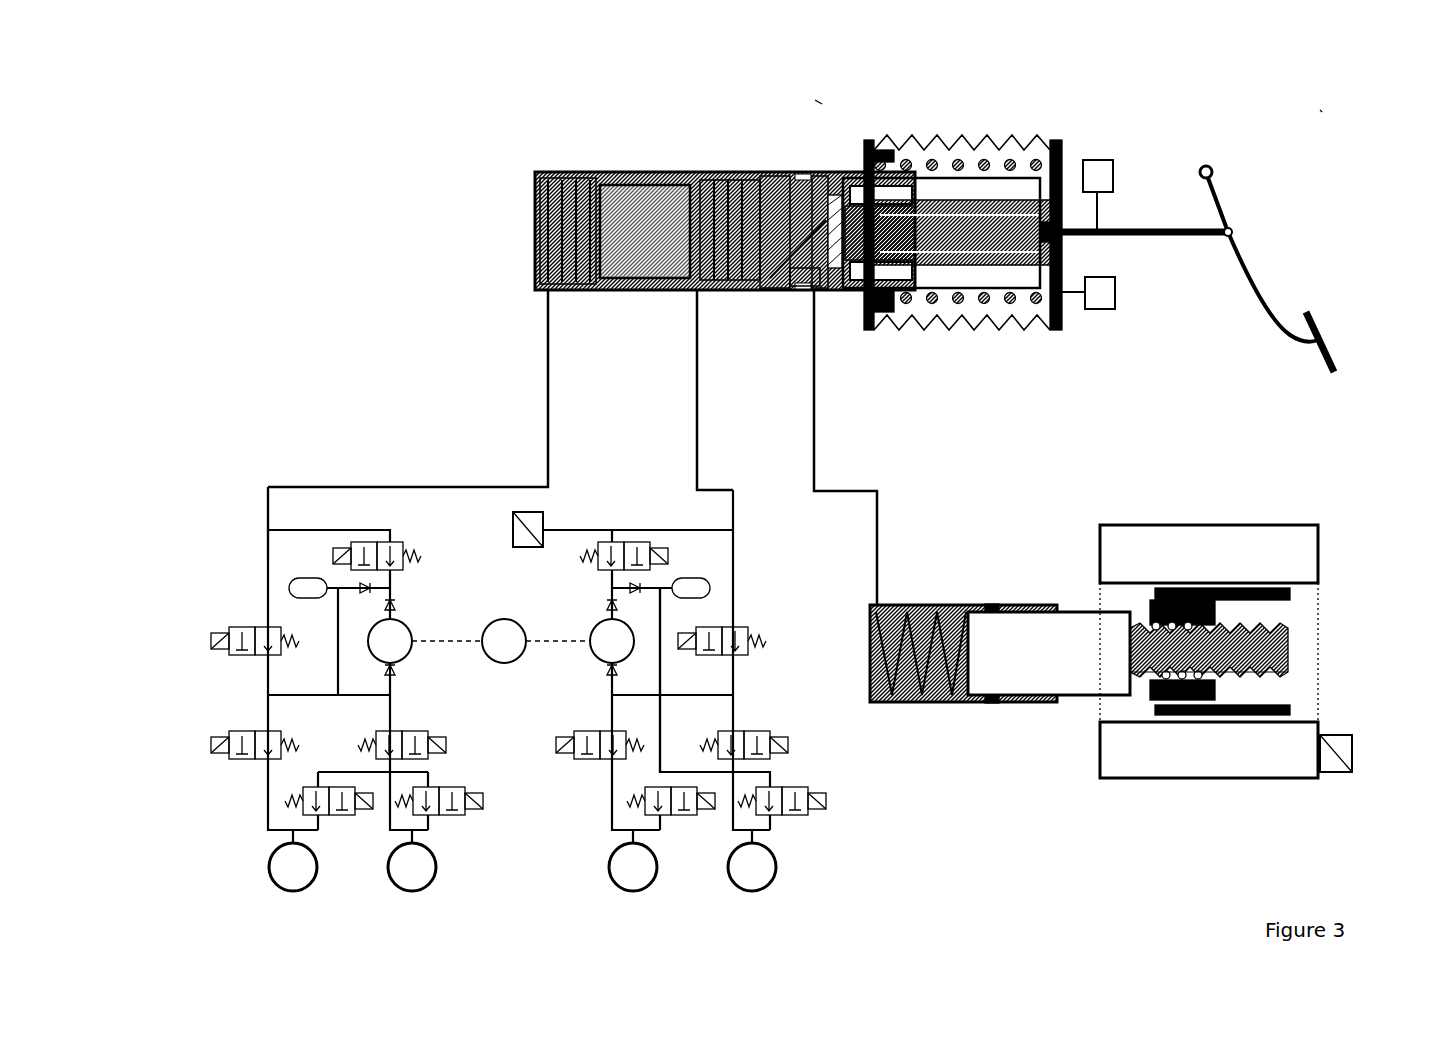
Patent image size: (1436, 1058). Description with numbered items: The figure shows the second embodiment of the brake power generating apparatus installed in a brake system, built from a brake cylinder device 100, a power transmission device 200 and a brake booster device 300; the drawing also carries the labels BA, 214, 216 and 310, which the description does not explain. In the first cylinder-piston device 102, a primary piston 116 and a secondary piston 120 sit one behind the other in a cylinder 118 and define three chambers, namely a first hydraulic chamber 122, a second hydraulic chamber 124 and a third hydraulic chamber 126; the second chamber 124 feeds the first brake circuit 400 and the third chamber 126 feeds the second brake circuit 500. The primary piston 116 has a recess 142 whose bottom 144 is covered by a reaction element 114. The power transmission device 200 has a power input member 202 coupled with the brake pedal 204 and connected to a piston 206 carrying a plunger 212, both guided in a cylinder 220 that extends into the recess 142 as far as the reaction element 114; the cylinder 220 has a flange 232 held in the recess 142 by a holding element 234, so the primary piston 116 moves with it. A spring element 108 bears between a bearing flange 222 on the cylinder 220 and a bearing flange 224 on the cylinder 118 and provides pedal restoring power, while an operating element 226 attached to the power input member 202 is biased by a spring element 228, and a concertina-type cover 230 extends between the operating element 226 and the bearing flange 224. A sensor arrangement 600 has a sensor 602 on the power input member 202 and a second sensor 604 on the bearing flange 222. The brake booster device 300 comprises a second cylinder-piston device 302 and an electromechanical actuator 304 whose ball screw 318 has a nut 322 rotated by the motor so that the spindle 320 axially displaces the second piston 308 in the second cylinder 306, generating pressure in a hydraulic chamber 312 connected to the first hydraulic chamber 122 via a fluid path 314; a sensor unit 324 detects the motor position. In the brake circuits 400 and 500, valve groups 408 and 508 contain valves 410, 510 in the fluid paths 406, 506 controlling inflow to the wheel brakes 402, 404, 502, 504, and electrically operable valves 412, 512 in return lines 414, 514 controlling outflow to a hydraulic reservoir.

The brake apparatus BA is at (1328, 108).
The brake cylinder device 100 is at (822, 98).
The first cylinder-piston device 102 is at (725, 236).
The spring element 108 is at (964, 233).
The reaction element 114 is at (818, 172).
The primary piston 116 is at (776, 172).
The cylinder 118 is at (640, 290).
The secondary piston 120 is at (650, 172).
The first hydraulic chamber 122 is at (789, 290).
The second hydraulic chamber 124 is at (738, 172).
The third hydraulic chamber 126 is at (560, 172).
The recess 142 is at (888, 330).
The bottom 144 is at (753, 290).
The power transmission device 200 is at (1196, 235).
The power input member 202 is at (1173, 245).
The brake pedal 204 is at (1290, 345).
The piston 206 is at (930, 336).
The plunger 212 is at (858, 295).
The upper seal 214 is at (826, 292).
The piston head 216 is at (844, 172).
The cylinder 220 is at (1006, 332).
The bearing flange 222 is at (1043, 332).
The bearing flange 224 is at (870, 145).
The operating element 226 is at (1062, 318).
The spring element 228 is at (1054, 140).
The concertina-type cover 230 is at (992, 158).
The flange 232 is at (886, 150).
The holding element 234 is at (906, 145).
The brake booster device 300 is at (1121, 645).
The second cylinder-piston device 302 is at (991, 649).
The electromechanical actuator 304 is at (1224, 524).
The second cylinder 306 is at (875, 705).
The second piston 308 is at (1000, 697).
The ball screw 310 is at (1125, 660).
The hydraulic chamber 312 is at (925, 705).
The fluid path 314 is at (880, 520).
The ball screw 318 is at (1300, 605).
The spindle 320 is at (1290, 650).
The nut 322 is at (1300, 692).
The sensor unit 324 is at (1338, 775).
The first brake circuit 400 is at (682, 703).
The wheel brake 402 is at (633, 890).
The wheel brake 404 is at (752, 890).
The fluid path 406 is at (705, 430).
The valve group 408 is at (475, 603).
The valve 410 is at (750, 636).
The valve 412 is at (788, 787).
The return line 414 is at (655, 795).
The second brake circuit 500 is at (409, 670).
The wheel brake 502 is at (290, 890).
The wheel brake 504 is at (412, 890).
The fluid path 506 is at (546, 410).
The valve group 508 is at (250, 565).
The valve 510 is at (238, 628).
The valve 512 is at (462, 810).
The return line 514 is at (320, 765).
The sensor arrangement 600 is at (1119, 230).
The sensor 602 is at (1110, 158).
The second sensor 604 is at (1100, 311).